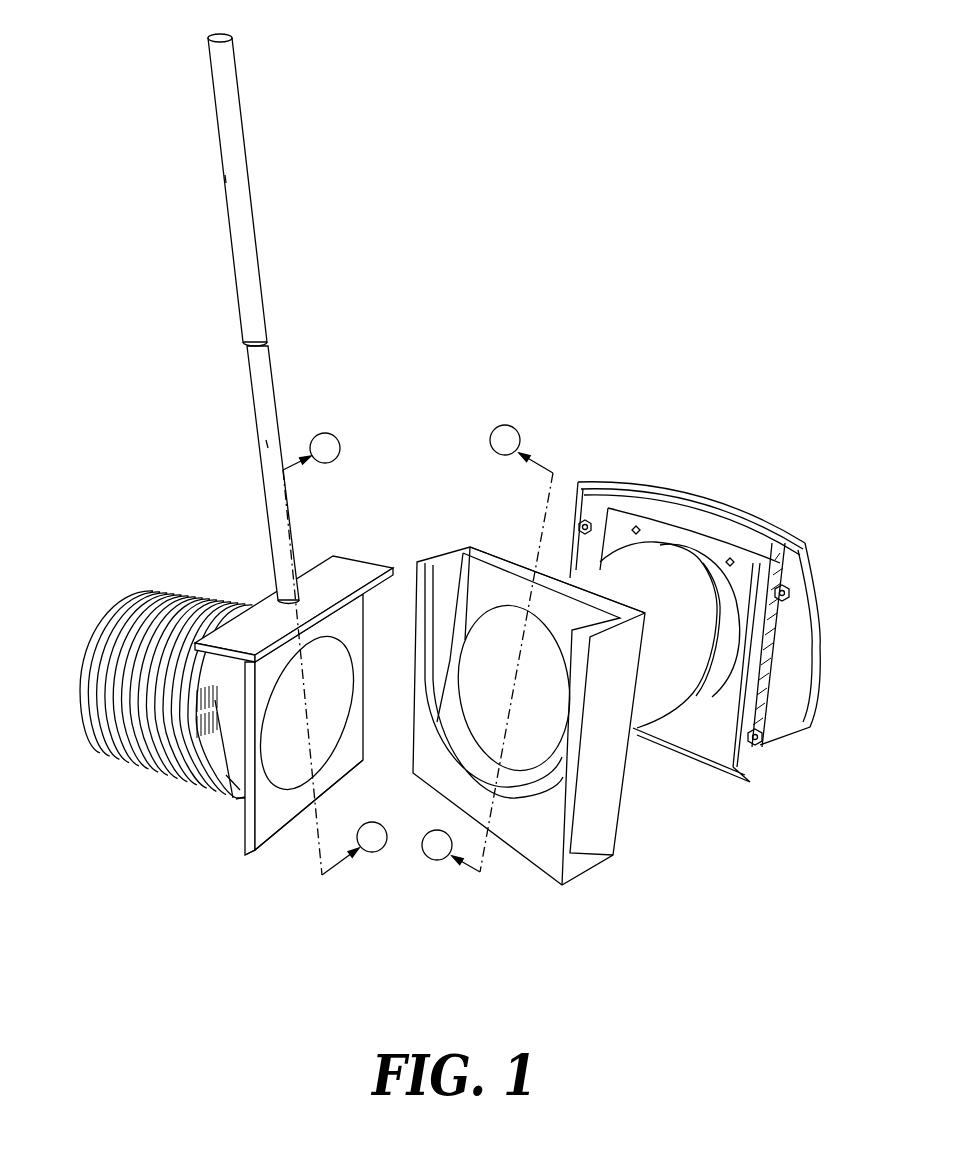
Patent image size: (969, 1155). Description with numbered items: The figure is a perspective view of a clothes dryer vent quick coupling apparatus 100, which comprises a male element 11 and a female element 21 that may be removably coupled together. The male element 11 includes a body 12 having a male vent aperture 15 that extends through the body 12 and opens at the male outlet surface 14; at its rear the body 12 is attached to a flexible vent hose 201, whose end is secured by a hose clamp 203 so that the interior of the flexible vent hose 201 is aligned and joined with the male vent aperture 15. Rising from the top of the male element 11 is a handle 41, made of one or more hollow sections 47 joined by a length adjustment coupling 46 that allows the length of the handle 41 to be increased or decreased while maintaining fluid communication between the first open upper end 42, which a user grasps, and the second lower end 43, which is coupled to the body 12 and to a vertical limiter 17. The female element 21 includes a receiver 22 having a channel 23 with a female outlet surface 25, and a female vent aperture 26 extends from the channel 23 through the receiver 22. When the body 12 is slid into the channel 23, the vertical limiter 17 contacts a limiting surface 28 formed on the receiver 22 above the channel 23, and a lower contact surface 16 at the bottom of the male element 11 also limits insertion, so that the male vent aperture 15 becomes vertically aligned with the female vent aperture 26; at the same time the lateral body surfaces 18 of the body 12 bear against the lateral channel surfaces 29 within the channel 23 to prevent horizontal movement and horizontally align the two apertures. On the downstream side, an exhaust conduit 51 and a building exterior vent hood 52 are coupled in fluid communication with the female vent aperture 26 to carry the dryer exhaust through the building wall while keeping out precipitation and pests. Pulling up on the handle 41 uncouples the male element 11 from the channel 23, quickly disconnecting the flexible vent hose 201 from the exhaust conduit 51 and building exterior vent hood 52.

The clothes dryer vent quick coupling apparatus 100 is at (663, 233).
The male element 11 is at (333, 893).
The body 12 is at (268, 771).
The male outlet surface 14 is at (340, 757).
The male vent aperture 15 is at (316, 717).
The lower contact surface 16 is at (246, 858).
The vertical limiter 17 is at (317, 592).
The lateral body surface 18 is at (236, 799).
The flexible vent hose 201 is at (166, 668).
The hose clamp 203 is at (192, 799).
The female element 21 is at (450, 893).
The receiver 22 is at (529, 722).
The channel 23 is at (473, 568).
The female outlet surface 25 is at (497, 598).
The female vent aperture 26 is at (498, 698).
The limiting surface 28 is at (600, 598).
The lateral channel surface 29 is at (446, 583).
The handle 41 is at (280, 465).
The first upper end 42 is at (204, 49).
The second lower end 43 is at (267, 582).
The length adjustment coupling 46 is at (234, 319).
The section 47 is at (222, 330).
The exhaust conduit 51 is at (695, 636).
The building exterior vent hood 52 is at (788, 735).